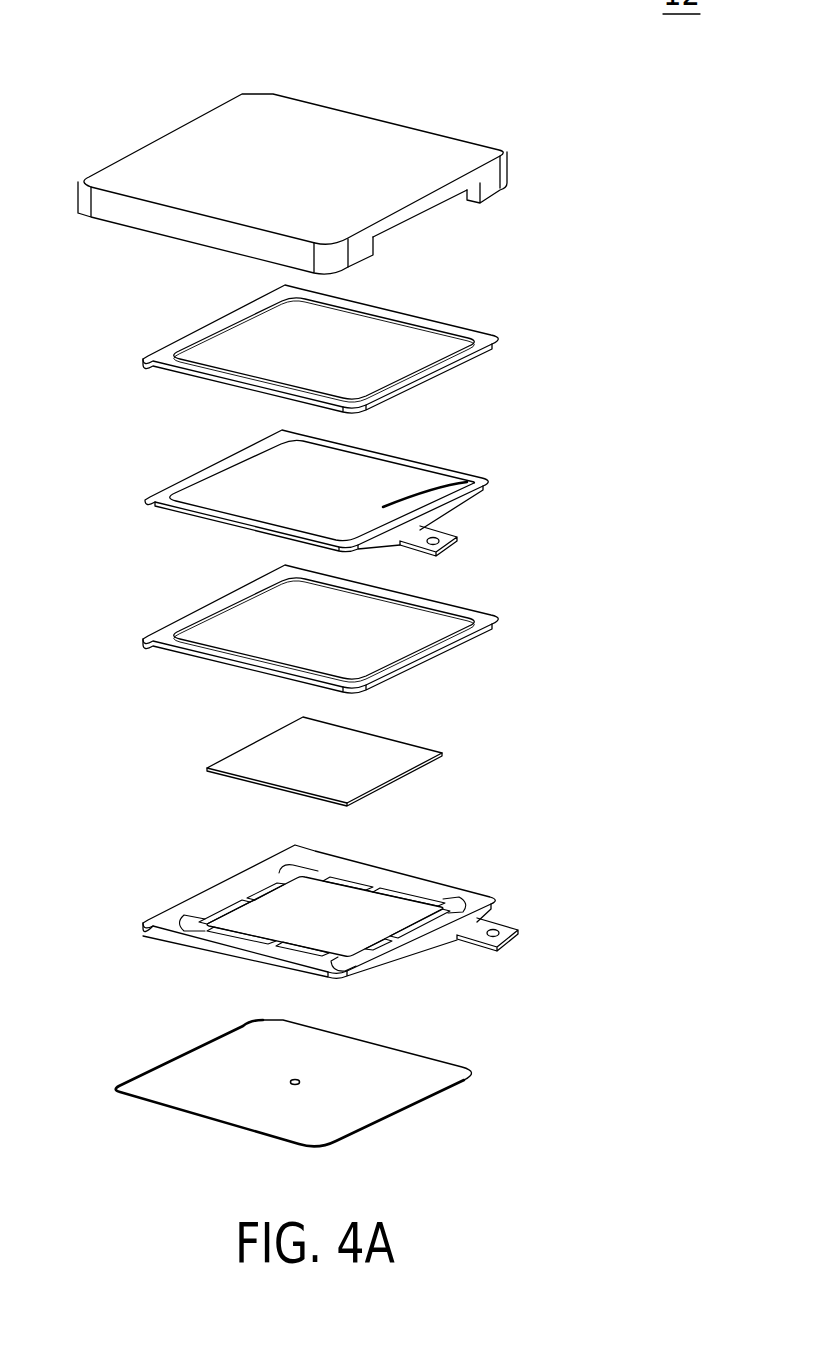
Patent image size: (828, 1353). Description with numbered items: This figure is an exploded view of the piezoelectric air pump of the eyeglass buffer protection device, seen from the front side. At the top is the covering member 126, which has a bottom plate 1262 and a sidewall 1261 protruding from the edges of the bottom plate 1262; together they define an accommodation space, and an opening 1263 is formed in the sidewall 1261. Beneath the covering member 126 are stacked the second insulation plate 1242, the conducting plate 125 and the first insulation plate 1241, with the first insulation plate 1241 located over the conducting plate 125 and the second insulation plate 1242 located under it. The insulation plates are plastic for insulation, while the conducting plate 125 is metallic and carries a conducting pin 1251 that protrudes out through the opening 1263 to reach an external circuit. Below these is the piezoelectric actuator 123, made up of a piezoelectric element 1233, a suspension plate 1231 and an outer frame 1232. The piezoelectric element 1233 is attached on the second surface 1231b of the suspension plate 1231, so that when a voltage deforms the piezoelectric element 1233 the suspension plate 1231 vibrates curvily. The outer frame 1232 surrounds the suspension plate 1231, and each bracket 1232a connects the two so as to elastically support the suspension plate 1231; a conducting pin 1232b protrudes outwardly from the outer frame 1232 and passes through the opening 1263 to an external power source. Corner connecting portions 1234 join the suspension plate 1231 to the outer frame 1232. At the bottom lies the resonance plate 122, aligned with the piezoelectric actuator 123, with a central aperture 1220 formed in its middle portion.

The covering member 126 is at (394, 165).
The bottom plate 1262 is at (365, 137).
The sidewall 1261 is at (490, 183).
The opening 1263 is at (439, 220).
The second insulation plate 1242 is at (483, 342).
The conducting plate 125 is at (369, 493).
The conducting pin 1251 is at (445, 538).
The first insulation plate 1241 is at (483, 622).
The piezoelectric actuator 123 is at (416, 858).
The piezoelectric element 1233 is at (365, 752).
The suspension plate 1231 is at (347, 900).
The second surface 1231b is at (270, 904).
The corner bridge 1234 is at (452, 897).
The outer frame 1232 is at (388, 958).
The bracket 1232a is at (263, 943).
The conducting pin 1232b is at (538, 926).
The resonance plate 122 is at (307, 1083).
The central aperture 1220 is at (289, 1081).